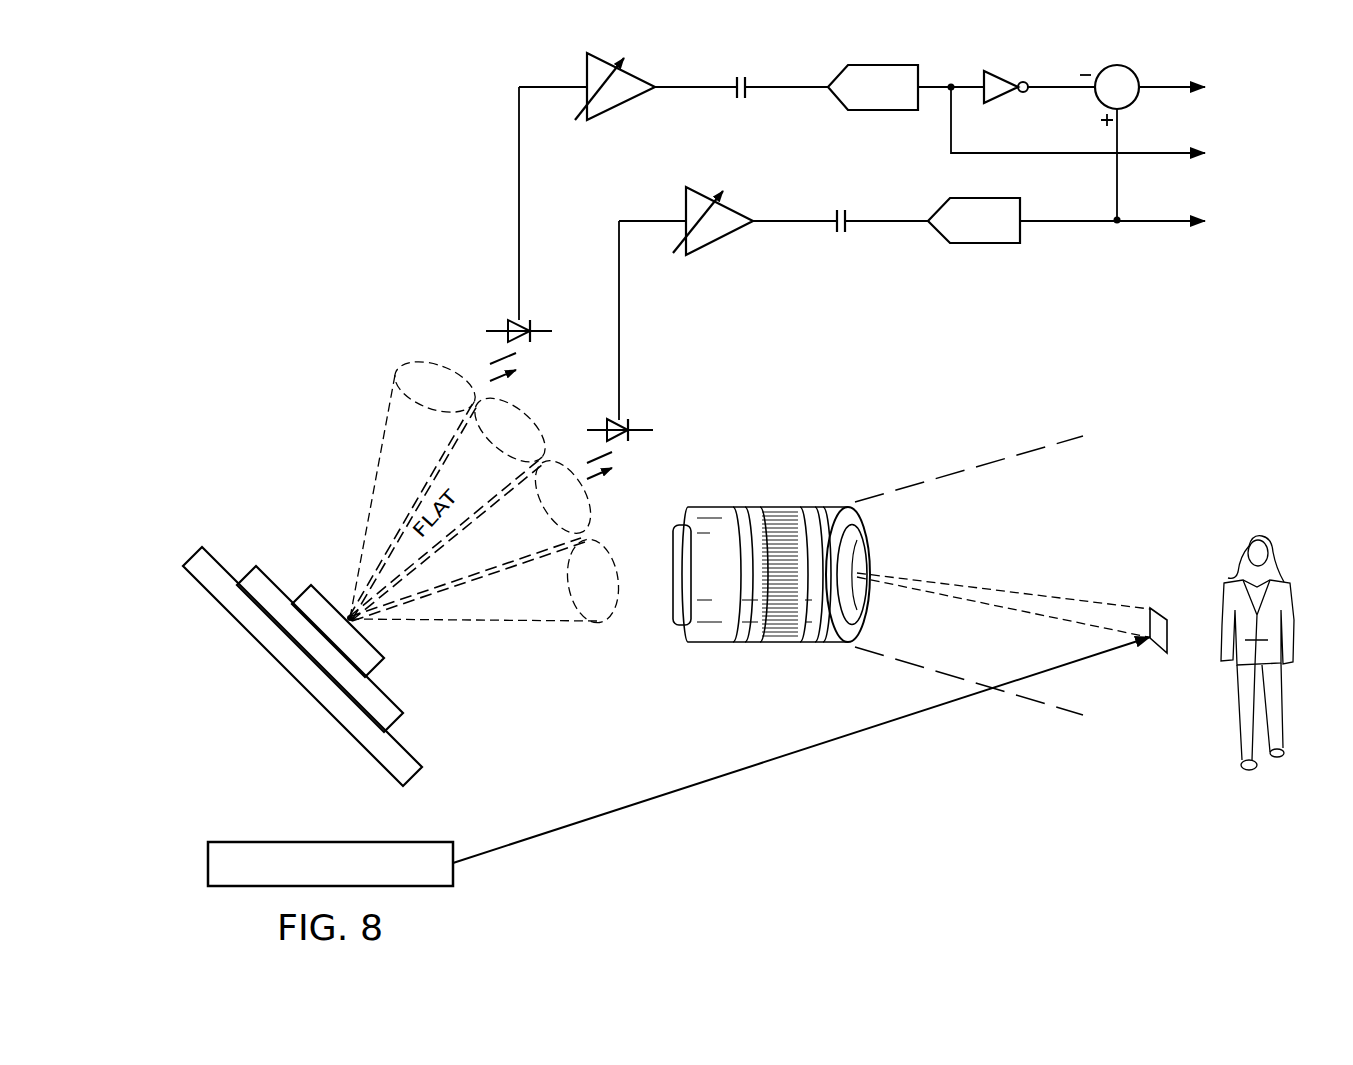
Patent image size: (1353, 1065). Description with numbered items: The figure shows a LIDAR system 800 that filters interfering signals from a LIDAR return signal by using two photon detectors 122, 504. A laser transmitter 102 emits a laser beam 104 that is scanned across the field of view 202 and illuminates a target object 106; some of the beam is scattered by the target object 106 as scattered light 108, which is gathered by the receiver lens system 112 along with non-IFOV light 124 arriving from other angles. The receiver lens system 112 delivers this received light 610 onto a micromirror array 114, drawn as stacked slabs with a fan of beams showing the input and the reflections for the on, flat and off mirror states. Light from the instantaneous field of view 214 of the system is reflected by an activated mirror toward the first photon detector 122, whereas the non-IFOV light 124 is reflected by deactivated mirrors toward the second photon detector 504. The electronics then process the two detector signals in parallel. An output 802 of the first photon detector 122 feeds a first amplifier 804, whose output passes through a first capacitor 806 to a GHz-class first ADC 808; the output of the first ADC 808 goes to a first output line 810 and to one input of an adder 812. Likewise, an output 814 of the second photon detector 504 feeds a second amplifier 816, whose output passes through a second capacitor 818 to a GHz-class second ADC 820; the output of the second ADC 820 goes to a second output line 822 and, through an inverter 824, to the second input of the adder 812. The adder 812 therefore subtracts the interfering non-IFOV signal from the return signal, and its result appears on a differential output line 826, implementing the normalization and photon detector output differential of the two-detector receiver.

The LIDAR system 800 is at (266, 113).
The second amplifier 816 is at (586, 78).
The second capacitor 818 is at (740, 100).
The second ADC 820 is at (885, 112).
The inverter 824 is at (1003, 73).
The adder 812 is at (1131, 70).
The differential output line 826 is at (1162, 89).
The second output line 822 is at (1162, 155).
The first output line 810 is at (1162, 223).
The first ADC 808 is at (984, 245).
The first amplifier 804 is at (684, 210).
The first capacitor 806 is at (838, 234).
The output of the first photon detector 802 is at (620, 318).
The output of the second photon detector 814 is at (517, 205).
The second photon detector 504 is at (503, 330).
The first photon detector 122 is at (641, 433).
The non-IFOV light 124 is at (375, 477).
The scattered light 108 is at (596, 516).
The received light 610 is at (481, 622).
The micromirror array 114 is at (293, 680).
The receiver lens system 112 is at (790, 506).
The field of view 202 is at (970, 471).
The instantaneous field of view 214 is at (1158, 612).
The target object 106 is at (1259, 535).
The laser beam 104 is at (655, 800).
The laser transmitter 102 is at (207, 860).